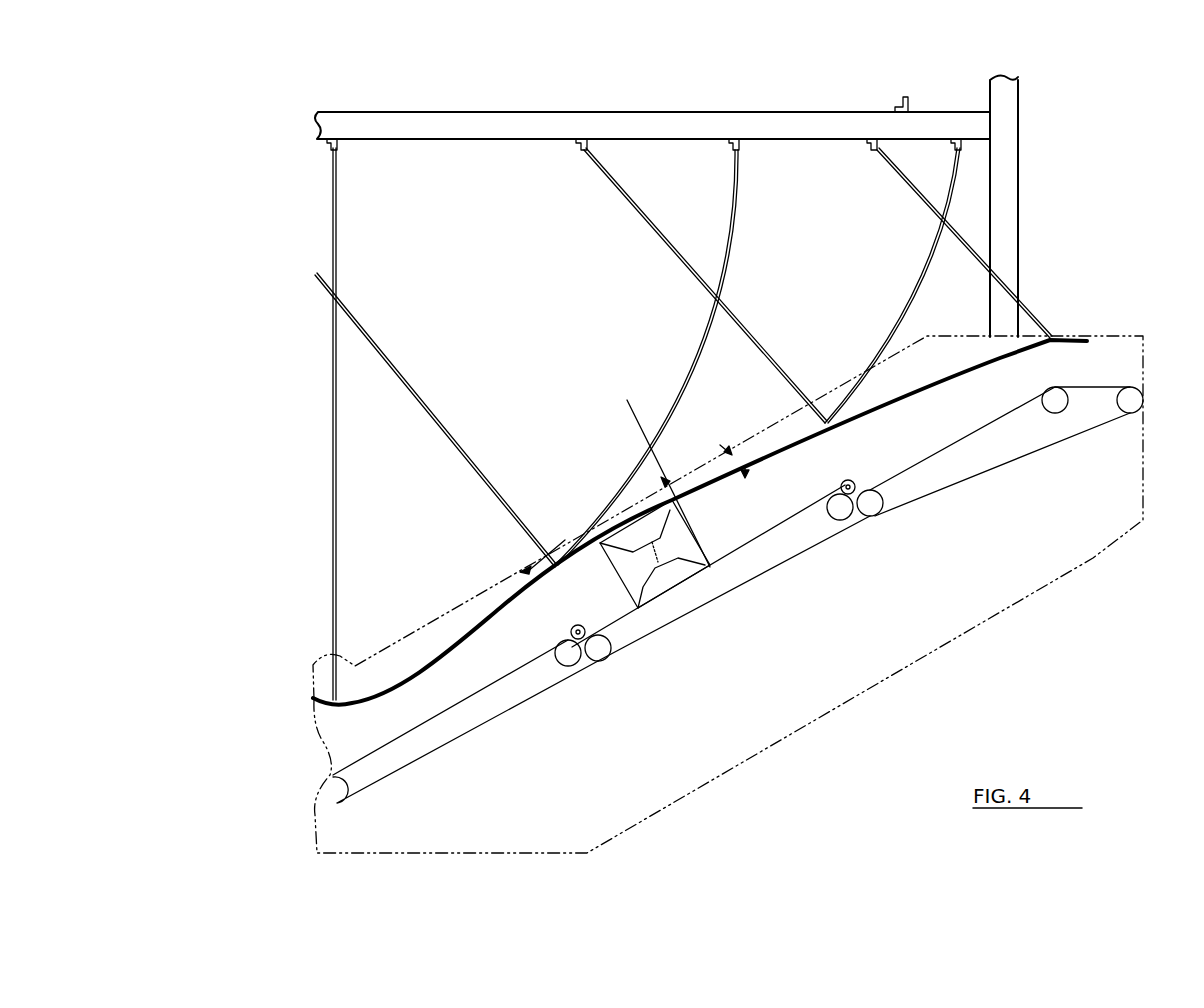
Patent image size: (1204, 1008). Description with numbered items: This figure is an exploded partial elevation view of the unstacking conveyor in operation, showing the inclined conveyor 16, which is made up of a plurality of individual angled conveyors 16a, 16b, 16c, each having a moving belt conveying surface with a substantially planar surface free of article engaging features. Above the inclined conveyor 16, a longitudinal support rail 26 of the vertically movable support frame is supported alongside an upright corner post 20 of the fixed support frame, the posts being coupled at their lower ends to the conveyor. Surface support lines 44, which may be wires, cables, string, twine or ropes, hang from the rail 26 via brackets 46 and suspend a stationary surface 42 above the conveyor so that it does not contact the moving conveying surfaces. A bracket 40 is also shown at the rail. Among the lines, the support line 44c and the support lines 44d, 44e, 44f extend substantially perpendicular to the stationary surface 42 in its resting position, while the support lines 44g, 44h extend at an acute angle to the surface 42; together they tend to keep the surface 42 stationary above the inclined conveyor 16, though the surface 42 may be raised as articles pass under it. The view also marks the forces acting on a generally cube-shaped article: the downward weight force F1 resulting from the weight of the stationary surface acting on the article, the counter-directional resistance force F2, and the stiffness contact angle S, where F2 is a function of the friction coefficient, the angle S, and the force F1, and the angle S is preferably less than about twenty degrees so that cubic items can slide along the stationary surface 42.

The inclined conveyor 16 is at (764, 676).
The individual angled conveyor 16a is at (462, 728).
The individual angled conveyor 16b is at (706, 600).
The individual angled conveyor 16c is at (960, 480).
The upright corner post 20 is at (1020, 158).
The longitudinal support rail 26 is at (500, 120).
The bracket 40 is at (896, 104).
The stationary surface 42 is at (470, 622).
The surface support lines 44 is at (296, 392).
The surface support line 44c is at (340, 558).
The surface support line 44d is at (404, 371).
The surface support line 44e is at (614, 186).
The surface support line 44f is at (1027, 311).
The surface support line 44g is at (690, 348).
The surface support line 44h is at (905, 291).
The bracket 46 is at (325, 146).
The downward weight force F1 is at (653, 483).
The counter-directional resistance force F2 is at (526, 557).
The stiffness contact angle S is at (734, 473).